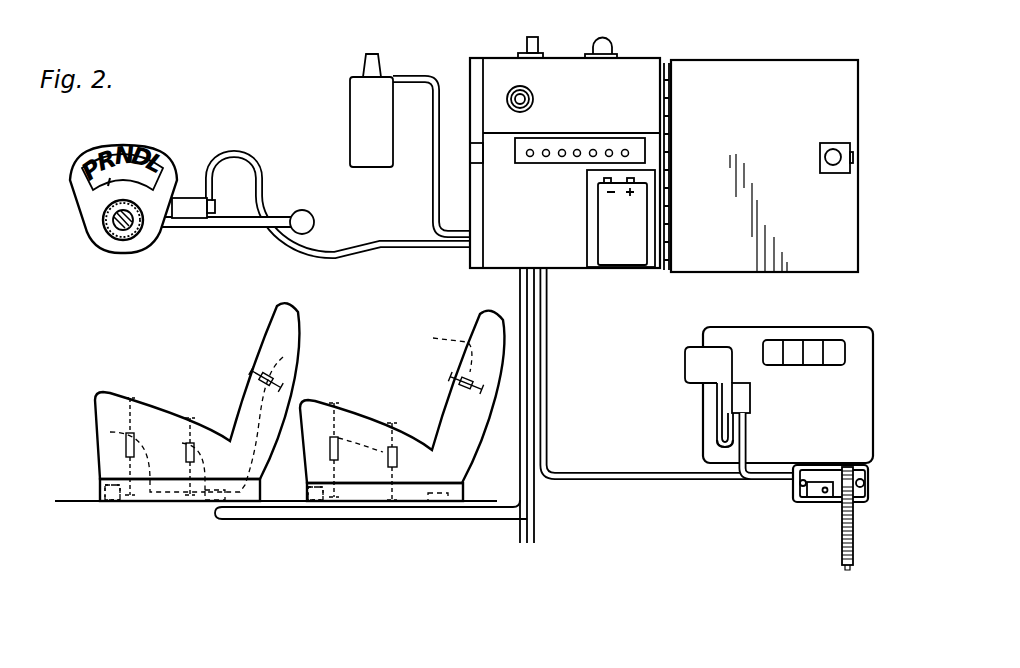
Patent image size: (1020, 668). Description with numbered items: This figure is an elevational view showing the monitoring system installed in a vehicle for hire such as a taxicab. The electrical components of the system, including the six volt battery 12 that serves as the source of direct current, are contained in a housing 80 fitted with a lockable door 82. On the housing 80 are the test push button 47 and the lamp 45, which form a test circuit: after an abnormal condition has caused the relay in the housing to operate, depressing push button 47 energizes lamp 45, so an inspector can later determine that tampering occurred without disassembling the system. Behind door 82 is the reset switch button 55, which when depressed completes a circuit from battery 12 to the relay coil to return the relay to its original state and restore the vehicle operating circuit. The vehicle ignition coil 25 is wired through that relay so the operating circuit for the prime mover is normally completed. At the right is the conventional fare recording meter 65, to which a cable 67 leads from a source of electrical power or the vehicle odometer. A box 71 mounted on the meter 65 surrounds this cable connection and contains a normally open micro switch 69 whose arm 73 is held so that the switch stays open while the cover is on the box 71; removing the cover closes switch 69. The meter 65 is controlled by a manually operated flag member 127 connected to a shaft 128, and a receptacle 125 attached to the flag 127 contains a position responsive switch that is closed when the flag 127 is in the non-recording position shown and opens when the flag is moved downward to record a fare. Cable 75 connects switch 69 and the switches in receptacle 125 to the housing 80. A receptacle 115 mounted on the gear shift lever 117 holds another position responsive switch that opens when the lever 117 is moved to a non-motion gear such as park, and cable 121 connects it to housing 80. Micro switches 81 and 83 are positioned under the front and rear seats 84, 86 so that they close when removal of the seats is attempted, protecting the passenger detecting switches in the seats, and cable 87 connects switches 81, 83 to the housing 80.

The battery 12 is at (618, 252).
The vehicle ignition coil 25 is at (362, 118).
The lamp 45 is at (603, 45).
The push button 47 is at (527, 42).
The switch button 55 is at (533, 99).
The fare recording meter 65 is at (826, 328).
The cable 67 is at (853, 518).
The micro switch 69 is at (829, 502).
The box 71 is at (868, 483).
The arm 73 is at (827, 492).
The cable means 75 is at (657, 483).
The housing 80 is at (463, 63).
The micro switch 81 is at (110, 500).
The door 82 is at (857, 41).
The micro switch 83 is at (313, 497).
The front seat 84 is at (192, 428).
The rear seat 86 is at (402, 437).
The cable 87 is at (420, 520).
The receptacle 115 is at (185, 212).
The gear shift lever 117 is at (238, 226).
The cable 121 is at (337, 262).
The receptacle 125 is at (752, 392).
The flag member 127 is at (727, 393).
The shaft 128 is at (717, 436).